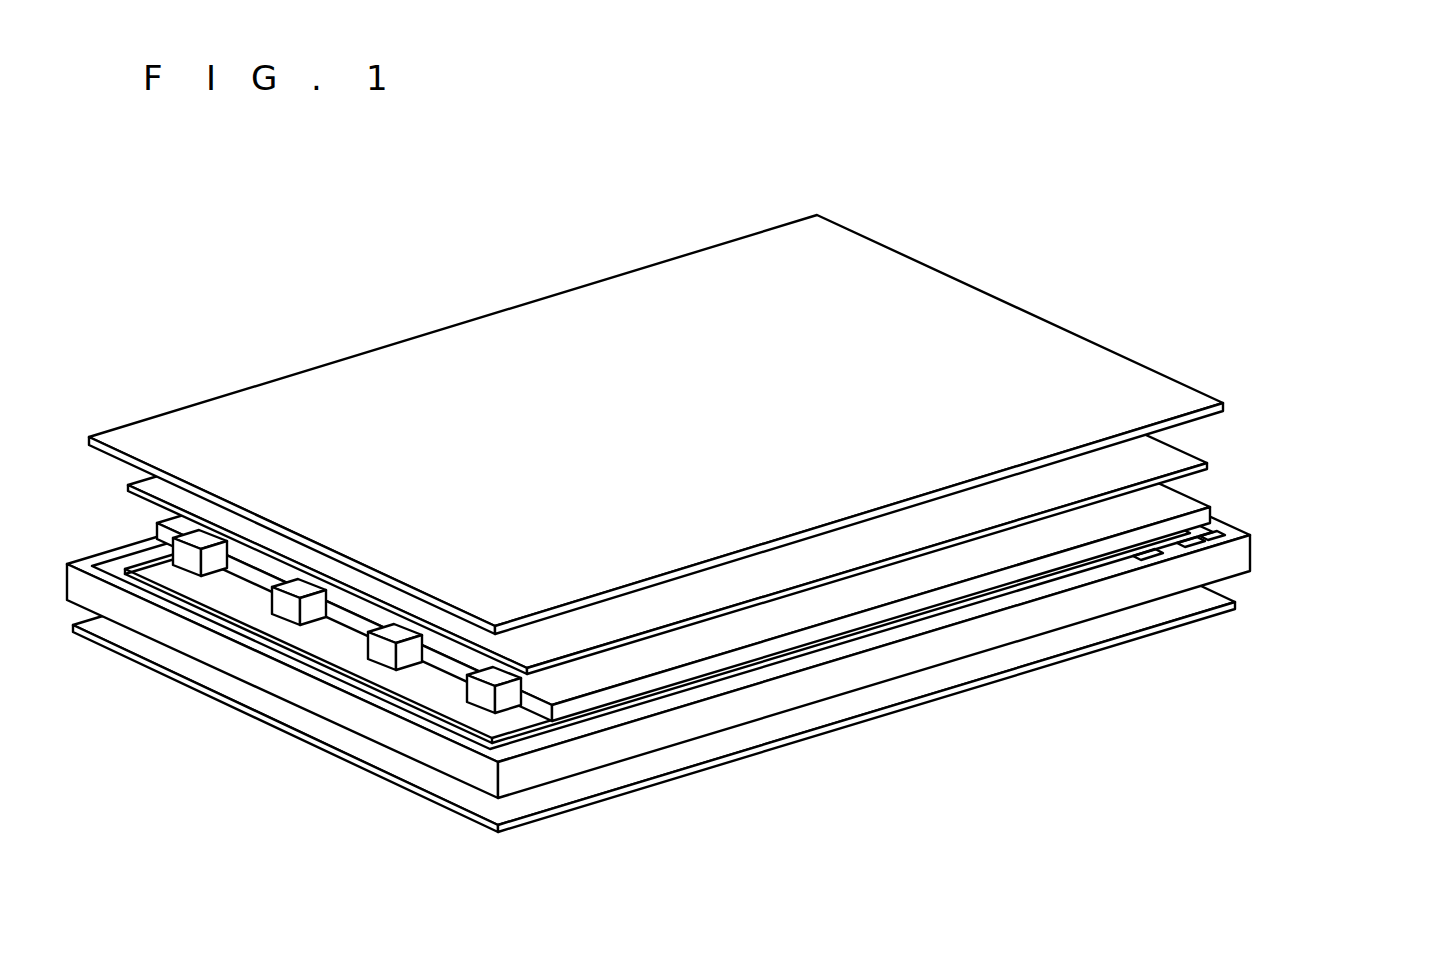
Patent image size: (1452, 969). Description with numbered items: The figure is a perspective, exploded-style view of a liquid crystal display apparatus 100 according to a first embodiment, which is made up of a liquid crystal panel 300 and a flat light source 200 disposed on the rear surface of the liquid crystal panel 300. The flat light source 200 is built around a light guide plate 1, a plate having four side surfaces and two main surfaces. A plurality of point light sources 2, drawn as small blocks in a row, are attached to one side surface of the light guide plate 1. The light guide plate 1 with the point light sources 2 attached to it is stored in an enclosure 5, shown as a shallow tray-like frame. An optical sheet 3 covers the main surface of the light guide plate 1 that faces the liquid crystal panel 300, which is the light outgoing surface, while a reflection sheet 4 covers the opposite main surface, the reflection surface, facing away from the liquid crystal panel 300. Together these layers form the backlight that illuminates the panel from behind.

The liquid crystal display apparatus 100 is at (748, 512).
The flat light source 200 is at (698, 559).
The liquid crystal panel 300 is at (578, 338).
The light guide plate 1 is at (1042, 546).
The point light sources 2 is at (186, 556).
The optical sheet 3 is at (1253, 616).
The reflection sheet 4 is at (893, 696).
The enclosure 5 is at (975, 638).